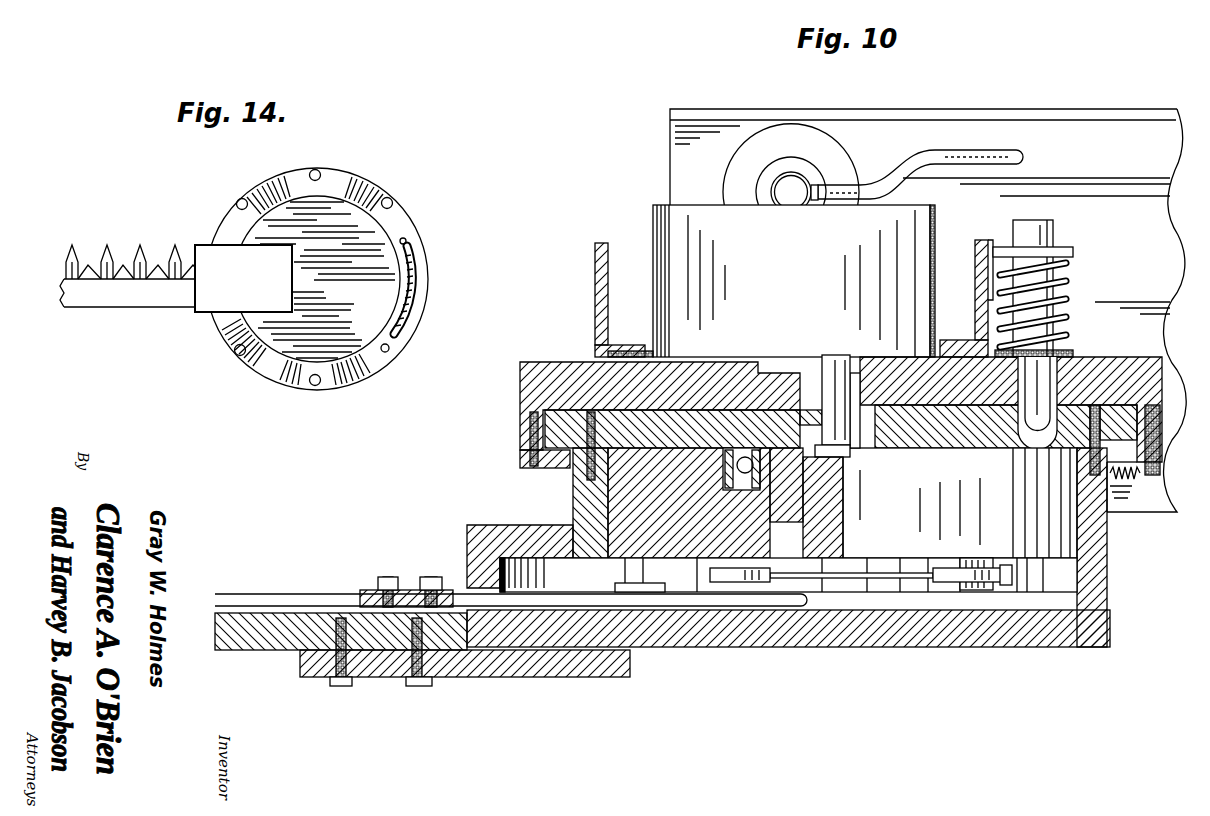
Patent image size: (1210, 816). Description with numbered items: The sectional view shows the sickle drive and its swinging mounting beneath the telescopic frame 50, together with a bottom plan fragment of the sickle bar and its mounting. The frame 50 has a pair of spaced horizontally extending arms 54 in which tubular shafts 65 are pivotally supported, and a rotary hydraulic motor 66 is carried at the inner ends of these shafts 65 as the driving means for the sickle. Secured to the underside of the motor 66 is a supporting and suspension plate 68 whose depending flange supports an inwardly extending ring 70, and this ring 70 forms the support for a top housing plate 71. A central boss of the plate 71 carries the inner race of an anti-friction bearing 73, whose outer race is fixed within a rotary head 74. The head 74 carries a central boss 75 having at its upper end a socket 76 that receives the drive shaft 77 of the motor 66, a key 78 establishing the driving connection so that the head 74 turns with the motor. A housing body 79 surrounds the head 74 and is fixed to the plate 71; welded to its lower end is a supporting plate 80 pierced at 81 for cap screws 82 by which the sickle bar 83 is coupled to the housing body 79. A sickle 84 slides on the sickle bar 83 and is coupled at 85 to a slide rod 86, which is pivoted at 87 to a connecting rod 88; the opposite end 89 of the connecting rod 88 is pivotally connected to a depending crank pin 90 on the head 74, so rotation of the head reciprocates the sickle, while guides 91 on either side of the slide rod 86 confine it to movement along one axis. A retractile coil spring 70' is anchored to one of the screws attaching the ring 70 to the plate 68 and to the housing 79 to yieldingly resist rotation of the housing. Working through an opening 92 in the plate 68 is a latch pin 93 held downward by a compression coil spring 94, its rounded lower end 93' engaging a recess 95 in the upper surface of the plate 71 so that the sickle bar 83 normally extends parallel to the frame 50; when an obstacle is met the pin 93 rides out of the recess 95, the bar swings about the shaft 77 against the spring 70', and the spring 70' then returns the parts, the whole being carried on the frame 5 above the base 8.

In FIG. 10, the frame 5 is at (1160, 148).
In FIG. 10, the base plate 8 is at (788, 642).
In FIG. 10, the telescopic frame 50 is at (1016, 104).
In FIG. 10, the horizontally extending arms 54 is at (722, 113).
In FIG. 10, the tubular shaft 65 is at (778, 186).
In FIG. 10, the rotary hydraulic motor 66 is at (791, 281).
In FIG. 10, the supporting and suspension plate 68 is at (1120, 367).
In FIG. 10, the ring 70 is at (545, 476).
In FIG. 14, the ring 70 is at (317, 279).
In FIG. 10, the retractile coil spring 70' is at (1137, 508).
In FIG. 14, the retractile coil spring 70' is at (425, 295).
In FIG. 10, the top housing plate 71 is at (680, 420).
In FIG. 10, the anti-friction bearing 73 is at (724, 470).
In FIG. 10, the rotary head 74 is at (1085, 535).
In FIG. 10, the central boss 75 is at (840, 496).
In FIG. 10, the socket 76 is at (828, 400).
In FIG. 10, the drive shaft 77 is at (848, 372).
In FIG. 10, the key 78 is at (791, 391).
In FIG. 10, the housing body 79 is at (508, 537).
In FIG. 14, the housing body 79 is at (382, 236).
In FIG. 10, the supporting plate 80 is at (553, 668).
In FIG. 14, the supporting plate 80 is at (210, 303).
In FIG. 10, the pierced opening 81 is at (400, 679).
In FIG. 10, the cap screw 82 is at (300, 651).
In FIG. 10, the sickle bar 83 is at (280, 622).
In FIG. 14, the sickle bar 83 is at (127, 299).
In FIG. 10, the sickle 84 is at (240, 597).
In FIG. 14, the sickle 84 is at (122, 265).
In FIG. 10, the coupling 85 is at (402, 585).
In FIG. 10, the slide rod 86 is at (596, 600).
In FIG. 10, the pivot 87 is at (788, 571).
In FIG. 10, the connecting rod 88 is at (876, 580).
In FIG. 10, the opposite end of connecting rod 89 is at (997, 583).
In FIG. 10, the crank pin 90 is at (962, 568).
In FIG. 10, the guide 91 is at (641, 577).
In FIG. 10, the opening 92 is at (1066, 354).
In FIG. 10, the latch pin 93 is at (1056, 279).
In FIG. 10, the plunger end 93' is at (997, 412).
In FIG. 10, the compression coil spring 94 is at (1060, 297).
In FIG. 10, the recess 95 is at (1022, 405).